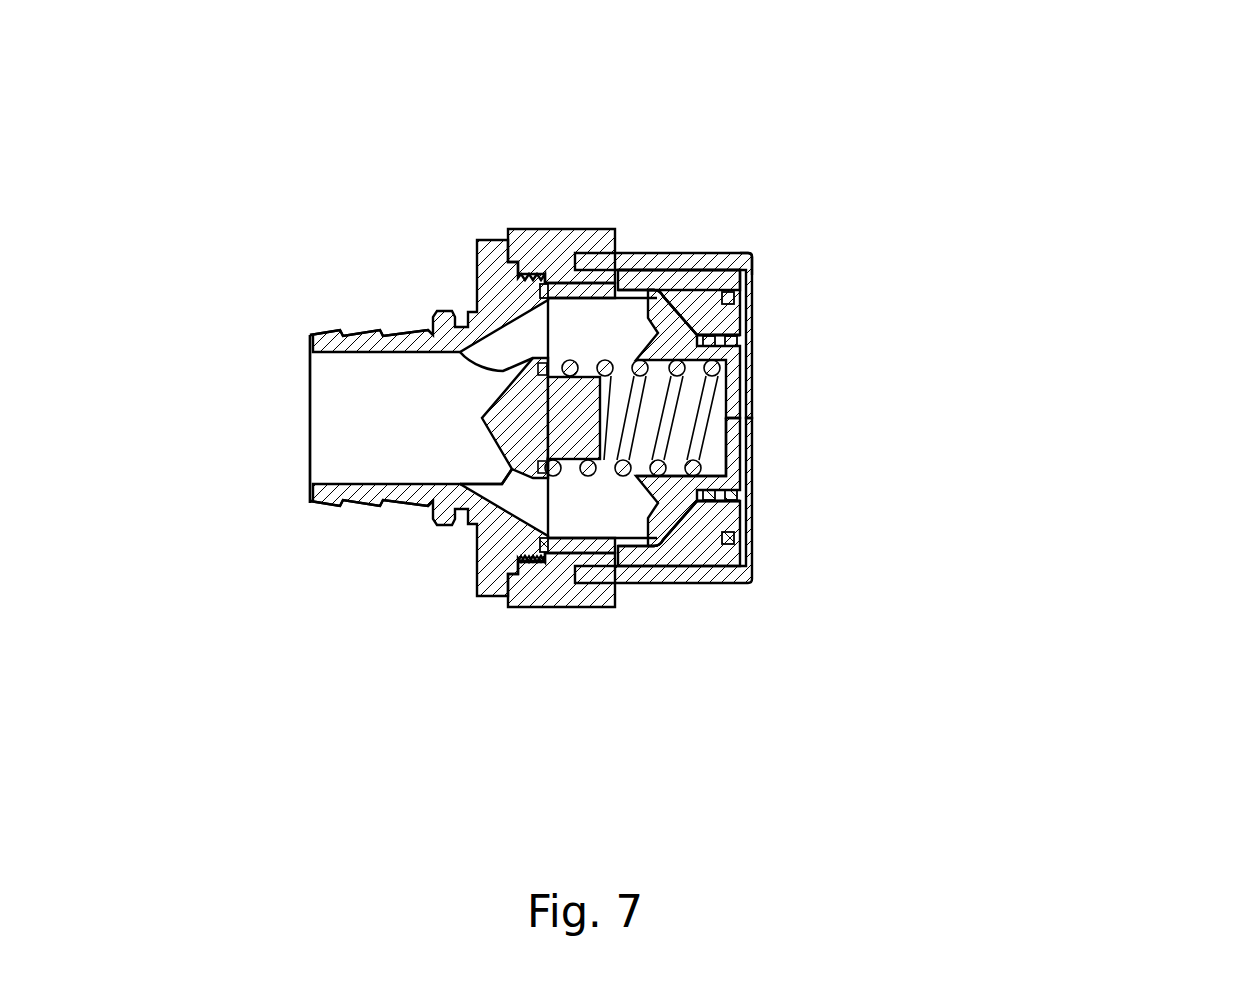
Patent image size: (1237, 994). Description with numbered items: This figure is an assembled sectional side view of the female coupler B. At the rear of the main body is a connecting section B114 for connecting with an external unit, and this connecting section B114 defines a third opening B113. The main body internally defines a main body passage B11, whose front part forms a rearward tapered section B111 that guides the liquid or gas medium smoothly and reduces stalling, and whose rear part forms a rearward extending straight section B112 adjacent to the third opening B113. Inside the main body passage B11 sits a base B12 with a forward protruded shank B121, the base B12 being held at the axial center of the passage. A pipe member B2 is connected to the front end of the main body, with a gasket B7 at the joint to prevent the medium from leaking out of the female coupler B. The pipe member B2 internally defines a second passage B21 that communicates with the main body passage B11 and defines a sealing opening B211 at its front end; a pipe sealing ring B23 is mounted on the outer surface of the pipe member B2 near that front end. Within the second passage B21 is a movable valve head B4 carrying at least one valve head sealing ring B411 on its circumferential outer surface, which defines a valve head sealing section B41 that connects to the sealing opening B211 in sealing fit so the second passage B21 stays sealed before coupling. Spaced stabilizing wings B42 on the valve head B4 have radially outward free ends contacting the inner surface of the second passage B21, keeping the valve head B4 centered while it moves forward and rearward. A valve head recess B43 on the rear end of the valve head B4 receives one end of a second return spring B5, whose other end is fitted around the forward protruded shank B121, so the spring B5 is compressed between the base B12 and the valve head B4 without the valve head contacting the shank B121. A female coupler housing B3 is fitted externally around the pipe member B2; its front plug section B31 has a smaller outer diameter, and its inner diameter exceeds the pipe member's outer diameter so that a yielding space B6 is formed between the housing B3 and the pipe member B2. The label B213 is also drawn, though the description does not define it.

The female coupler B is at (1214, 47).
The main body passage B11 is at (386, 362).
The tapered section B111 is at (513, 493).
The straight section B112 is at (390, 442).
The third opening B113 is at (308, 422).
The connecting section B114 is at (327, 333).
The base B12 is at (545, 522).
The forward protruded shank B121 is at (580, 440).
The pipe member B2 is at (750, 525).
The second passage B21 is at (645, 285).
The sealing opening B211 is at (742, 335).
The insert cone B213 is at (660, 296).
The pipe sealing ring B23 is at (735, 294).
The female coupler housing B3 is at (590, 250).
The plug section B31 is at (720, 275).
The movable valve head B4 is at (690, 548).
The valve head sealing section B41 is at (742, 335).
The valve head sealing ring B411 is at (734, 346).
The stabilizing wings B42 is at (660, 548).
The valve head recess B43 is at (628, 560).
The second return spring B5 is at (600, 500).
The yielding space B6 is at (746, 256).
The gasket B7 is at (540, 284).